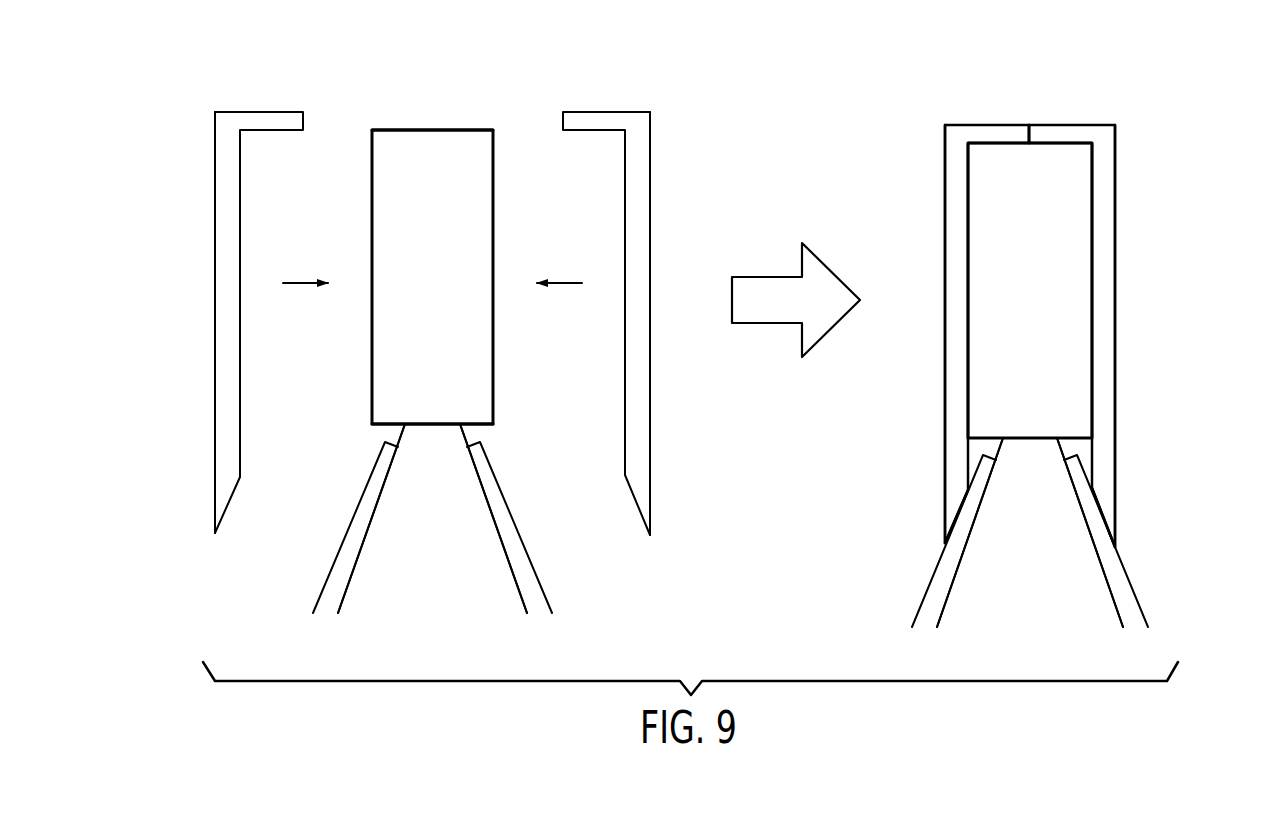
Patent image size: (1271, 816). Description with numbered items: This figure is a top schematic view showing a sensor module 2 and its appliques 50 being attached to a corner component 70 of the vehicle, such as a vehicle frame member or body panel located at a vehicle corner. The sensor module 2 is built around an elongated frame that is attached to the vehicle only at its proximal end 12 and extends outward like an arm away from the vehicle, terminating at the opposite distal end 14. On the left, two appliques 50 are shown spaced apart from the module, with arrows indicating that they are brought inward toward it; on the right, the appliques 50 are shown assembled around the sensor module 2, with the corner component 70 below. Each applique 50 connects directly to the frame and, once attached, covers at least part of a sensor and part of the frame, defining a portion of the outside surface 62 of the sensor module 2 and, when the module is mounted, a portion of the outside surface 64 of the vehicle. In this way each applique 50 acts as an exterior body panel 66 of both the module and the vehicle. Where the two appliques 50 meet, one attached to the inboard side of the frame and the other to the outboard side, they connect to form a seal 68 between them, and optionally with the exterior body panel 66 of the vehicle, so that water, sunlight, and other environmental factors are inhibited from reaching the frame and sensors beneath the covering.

The sensor module 2 is at (417, 147).
The proximal end 12 is at (410, 408).
The distal end 14 is at (458, 140).
The applique 50 is at (217, 315).
The outside surface of the sensor module 62 is at (198, 212).
The outside surface of the vehicle 64 is at (330, 545).
The exterior body panel 66 is at (340, 575).
The seal 68 is at (1033, 133).
The corner component 70 is at (413, 527).